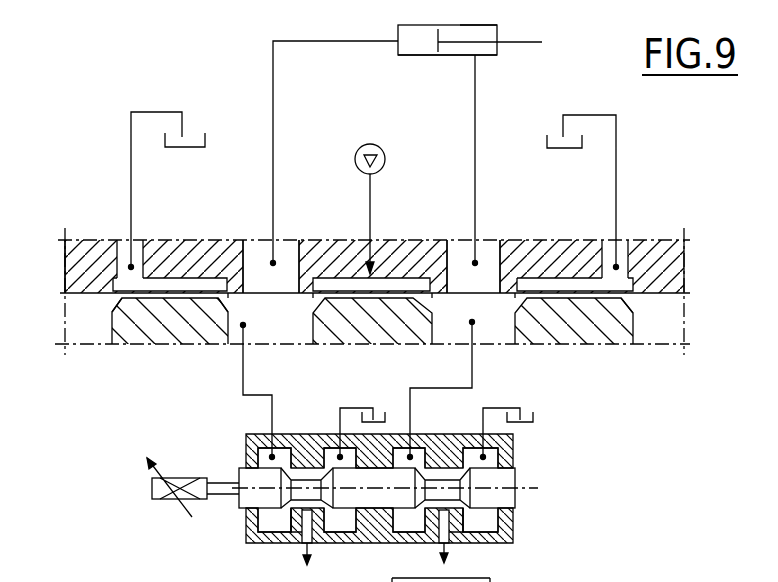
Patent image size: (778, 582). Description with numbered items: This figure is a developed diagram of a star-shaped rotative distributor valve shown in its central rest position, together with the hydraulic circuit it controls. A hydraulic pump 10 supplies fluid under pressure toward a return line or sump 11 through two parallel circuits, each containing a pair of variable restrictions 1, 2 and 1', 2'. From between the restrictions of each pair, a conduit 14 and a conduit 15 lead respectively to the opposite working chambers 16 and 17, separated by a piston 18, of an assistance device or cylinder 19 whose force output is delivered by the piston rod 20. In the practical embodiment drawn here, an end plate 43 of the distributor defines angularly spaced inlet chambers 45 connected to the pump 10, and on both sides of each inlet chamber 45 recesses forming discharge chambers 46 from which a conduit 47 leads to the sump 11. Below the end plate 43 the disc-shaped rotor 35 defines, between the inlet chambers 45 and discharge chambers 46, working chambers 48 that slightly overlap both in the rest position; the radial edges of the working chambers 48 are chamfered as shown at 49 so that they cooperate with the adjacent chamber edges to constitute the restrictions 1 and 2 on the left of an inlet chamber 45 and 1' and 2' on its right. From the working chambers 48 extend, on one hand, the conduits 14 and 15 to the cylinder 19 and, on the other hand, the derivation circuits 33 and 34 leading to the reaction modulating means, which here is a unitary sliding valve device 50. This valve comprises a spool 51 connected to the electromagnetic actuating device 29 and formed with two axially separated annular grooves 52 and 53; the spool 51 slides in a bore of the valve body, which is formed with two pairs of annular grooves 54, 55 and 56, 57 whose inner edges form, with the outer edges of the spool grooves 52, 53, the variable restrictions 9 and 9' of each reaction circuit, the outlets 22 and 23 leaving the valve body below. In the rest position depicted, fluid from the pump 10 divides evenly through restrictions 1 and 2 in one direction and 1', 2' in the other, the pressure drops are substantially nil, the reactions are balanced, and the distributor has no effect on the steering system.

The variable restriction 1 is at (311, 248).
The variable restriction 1' is at (436, 250).
The variable restriction 2 is at (154, 248).
The variable restriction 2' is at (517, 249).
The variable restriction 9 is at (325, 539).
The variable restriction 9' is at (439, 532).
The hydraulic pump 10 is at (385, 159).
The sump 11 is at (374, 286).
The conduit 14 is at (335, 153).
The conduit 15 is at (488, 160).
The working chamber 16 is at (418, 48).
The working chamber 17 is at (500, 31).
The piston 18 is at (448, 48).
The assistance device 19 is at (398, 53).
The piston rod 20 is at (520, 45).
The outlet 22 is at (315, 546).
The outlet 23 is at (457, 541).
The actuating device 29 is at (193, 493).
The derivation circuit 33 is at (250, 363).
The derivation circuit 34 is at (476, 363).
The rotor 35 is at (152, 337).
The end plate 43 is at (72, 268).
The inlet chamber 45 is at (385, 280).
The discharge chamber 46 is at (118, 286).
The conduit 47 is at (137, 250).
The working chamber 48 is at (273, 333).
The chamfer 49 is at (117, 300).
The sliding valve device 50 is at (244, 446).
The spool 51 is at (368, 500).
The annular groove 52 is at (302, 530).
The annular groove 53 is at (465, 516).
The annular groove 54 is at (283, 452).
The annular groove 55 is at (332, 440).
The annular groove 56 is at (421, 452).
The annular groove 57 is at (497, 457).